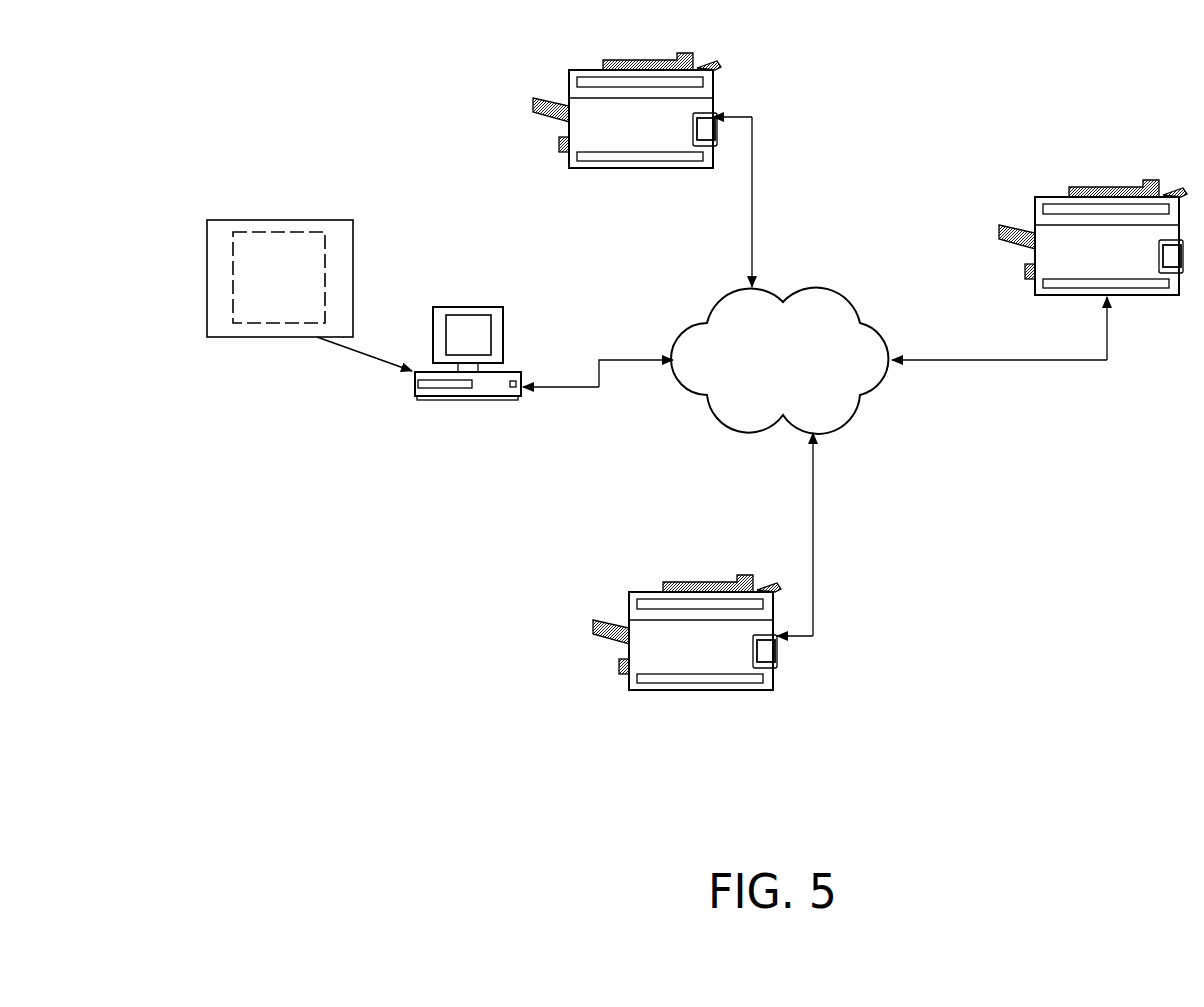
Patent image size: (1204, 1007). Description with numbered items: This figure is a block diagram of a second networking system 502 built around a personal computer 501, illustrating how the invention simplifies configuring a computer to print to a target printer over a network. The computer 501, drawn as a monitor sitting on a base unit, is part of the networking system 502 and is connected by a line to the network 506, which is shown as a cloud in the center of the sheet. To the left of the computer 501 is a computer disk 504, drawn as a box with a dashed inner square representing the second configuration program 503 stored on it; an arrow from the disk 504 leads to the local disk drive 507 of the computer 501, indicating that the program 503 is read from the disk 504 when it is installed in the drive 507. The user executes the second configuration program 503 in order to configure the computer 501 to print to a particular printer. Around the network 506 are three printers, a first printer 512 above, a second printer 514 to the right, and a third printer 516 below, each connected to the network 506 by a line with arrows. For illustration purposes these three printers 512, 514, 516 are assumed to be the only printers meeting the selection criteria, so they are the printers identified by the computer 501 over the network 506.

The personal computer 501 is at (432, 379).
The networking system 502 is at (452, 600).
The second configuration program 503 is at (252, 313).
The computer disk 504 is at (288, 220).
The network 506 is at (779, 361).
The local disk drive 507 is at (468, 402).
The first printer 512 is at (638, 172).
The second printer 514 is at (1108, 186).
The third printer 516 is at (700, 692).